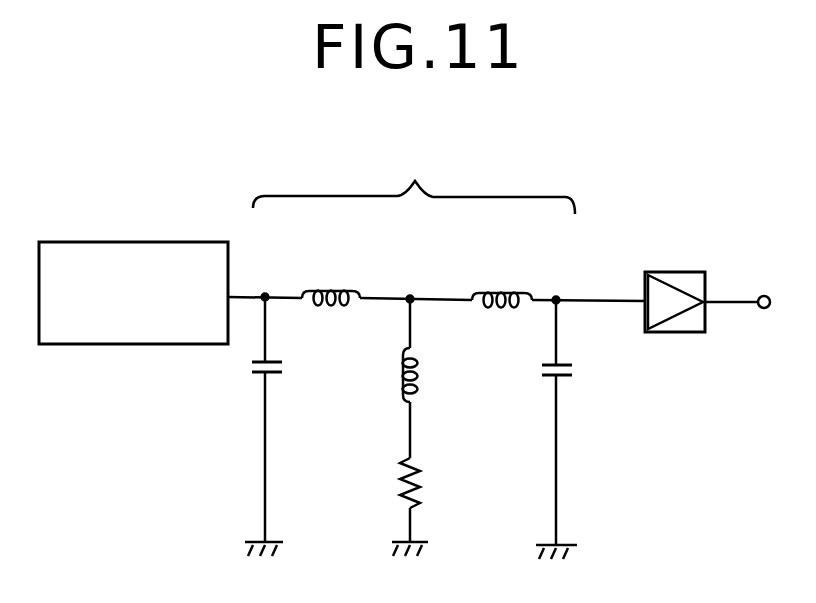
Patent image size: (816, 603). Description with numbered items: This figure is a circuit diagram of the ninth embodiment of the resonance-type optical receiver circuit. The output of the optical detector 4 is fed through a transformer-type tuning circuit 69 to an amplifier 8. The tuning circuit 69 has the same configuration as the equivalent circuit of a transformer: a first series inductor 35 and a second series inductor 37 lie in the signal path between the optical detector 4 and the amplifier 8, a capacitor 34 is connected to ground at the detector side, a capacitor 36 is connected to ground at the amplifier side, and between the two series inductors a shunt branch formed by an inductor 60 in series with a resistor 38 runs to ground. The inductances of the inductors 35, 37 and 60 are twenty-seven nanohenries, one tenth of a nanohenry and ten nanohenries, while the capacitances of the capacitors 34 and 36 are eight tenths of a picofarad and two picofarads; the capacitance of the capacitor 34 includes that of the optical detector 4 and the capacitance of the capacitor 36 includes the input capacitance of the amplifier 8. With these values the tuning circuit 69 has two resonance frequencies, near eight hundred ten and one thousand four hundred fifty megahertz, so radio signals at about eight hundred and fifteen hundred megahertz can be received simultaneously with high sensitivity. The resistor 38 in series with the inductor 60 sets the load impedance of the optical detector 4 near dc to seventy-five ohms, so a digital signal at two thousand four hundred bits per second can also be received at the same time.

The optical detector 4 is at (200, 242).
The tuning circuit 69 is at (414, 178).
The inductor 35 is at (333, 289).
The inductor 37 is at (503, 291).
The amplifier 8 is at (691, 271).
The capacitor 34 is at (283, 367).
The inductor 60 is at (419, 373).
The resistor 38 is at (420, 482).
The capacitor 36 is at (573, 372).